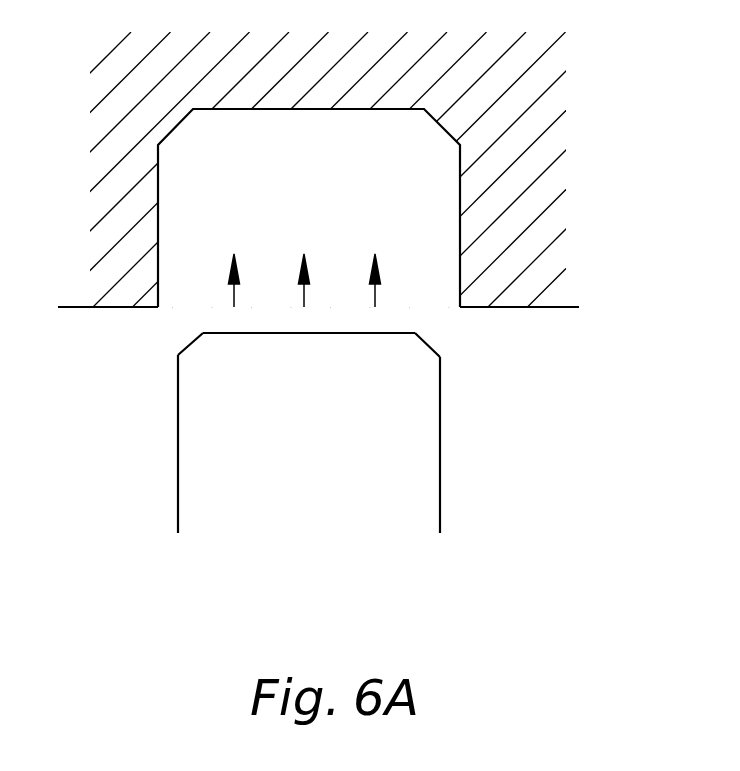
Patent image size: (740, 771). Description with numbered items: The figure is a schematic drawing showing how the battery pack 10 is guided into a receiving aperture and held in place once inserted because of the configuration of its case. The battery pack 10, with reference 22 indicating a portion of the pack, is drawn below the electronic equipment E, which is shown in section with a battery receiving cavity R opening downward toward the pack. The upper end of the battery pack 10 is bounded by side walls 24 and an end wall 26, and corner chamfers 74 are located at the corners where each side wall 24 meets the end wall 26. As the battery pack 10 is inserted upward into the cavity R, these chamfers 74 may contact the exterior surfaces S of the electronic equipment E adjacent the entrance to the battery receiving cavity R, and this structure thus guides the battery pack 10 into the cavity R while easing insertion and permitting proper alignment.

The battery pack 10 is at (309, 485).
The die body 22 is at (309, 444).
The side wall 24 is at (178, 485).
The end wall 26 is at (292, 333).
The corner chamfer 74 is at (192, 348).
The electronic equipment E is at (600, 128).
The battery receiving cavity R is at (306, 180).
The exterior surfaces S is at (147, 308).